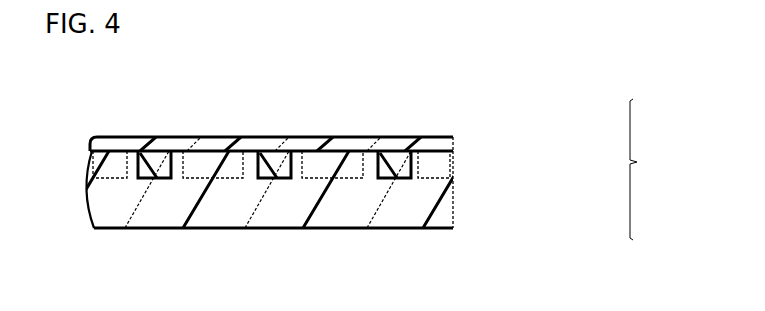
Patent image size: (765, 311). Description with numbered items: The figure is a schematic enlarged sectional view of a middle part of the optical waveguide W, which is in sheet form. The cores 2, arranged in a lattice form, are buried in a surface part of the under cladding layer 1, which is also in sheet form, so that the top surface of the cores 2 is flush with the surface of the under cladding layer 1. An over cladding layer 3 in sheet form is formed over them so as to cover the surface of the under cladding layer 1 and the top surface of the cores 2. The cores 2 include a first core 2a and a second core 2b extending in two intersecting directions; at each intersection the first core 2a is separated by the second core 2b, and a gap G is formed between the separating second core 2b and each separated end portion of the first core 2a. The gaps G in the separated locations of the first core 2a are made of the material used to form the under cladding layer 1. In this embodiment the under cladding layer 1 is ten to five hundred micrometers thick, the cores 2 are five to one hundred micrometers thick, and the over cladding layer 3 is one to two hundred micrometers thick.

The under cladding layer 1 is at (405, 202).
The cores 2 is at (347, 173).
The first core 2a is at (453, 162).
The second core 2b is at (405, 178).
The over cladding layer 3 is at (453, 143).
The gap G is at (295, 150).
The optical waveguide W is at (652, 169).